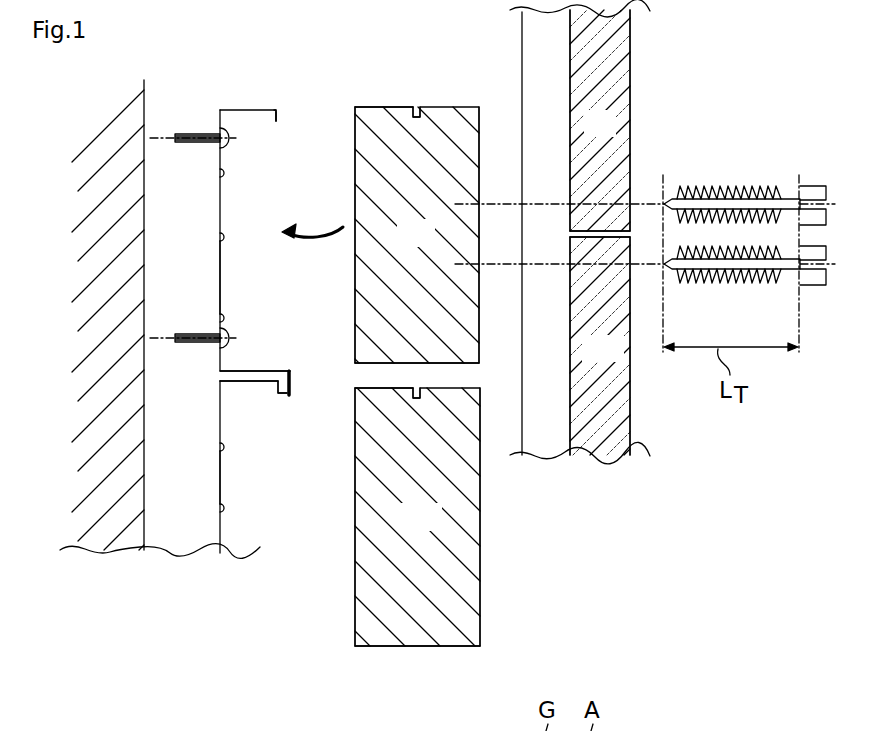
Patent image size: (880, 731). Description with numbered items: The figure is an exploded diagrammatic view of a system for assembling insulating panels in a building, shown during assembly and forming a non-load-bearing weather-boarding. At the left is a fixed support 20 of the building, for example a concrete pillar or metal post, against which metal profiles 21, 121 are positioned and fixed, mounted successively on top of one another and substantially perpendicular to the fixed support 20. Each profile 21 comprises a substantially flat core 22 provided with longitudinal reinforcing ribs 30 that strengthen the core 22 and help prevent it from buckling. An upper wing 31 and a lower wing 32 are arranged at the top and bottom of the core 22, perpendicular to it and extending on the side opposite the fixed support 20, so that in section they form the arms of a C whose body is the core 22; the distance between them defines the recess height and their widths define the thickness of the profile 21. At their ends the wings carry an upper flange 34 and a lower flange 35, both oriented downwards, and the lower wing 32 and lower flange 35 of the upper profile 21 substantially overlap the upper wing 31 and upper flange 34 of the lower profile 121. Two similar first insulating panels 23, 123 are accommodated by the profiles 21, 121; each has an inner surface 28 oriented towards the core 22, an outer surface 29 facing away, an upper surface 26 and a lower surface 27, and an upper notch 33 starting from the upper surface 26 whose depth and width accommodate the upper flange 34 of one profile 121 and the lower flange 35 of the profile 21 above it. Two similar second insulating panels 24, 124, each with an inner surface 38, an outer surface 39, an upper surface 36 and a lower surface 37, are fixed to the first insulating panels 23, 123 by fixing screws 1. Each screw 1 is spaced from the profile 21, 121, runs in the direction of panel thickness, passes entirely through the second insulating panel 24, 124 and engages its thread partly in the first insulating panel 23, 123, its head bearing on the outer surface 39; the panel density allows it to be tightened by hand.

The fixing screw 1 is at (720, 170).
The fixed support 20 is at (144, 88).
The profile 21 is at (251, 104).
The core 22 is at (224, 278).
The first insulating panel 23 is at (432, 246).
The second insulating panel 24 is at (616, 135).
The upper surface 26 is at (385, 106).
The lower surface 27 is at (482, 368).
The inner surface 28 is at (355, 160).
The outer surface 29 is at (480, 138).
The longitudinal reinforcing rib 30 is at (224, 173).
The upper wing 31 is at (277, 112).
The lower wing 32 is at (271, 370).
The upper notch 33 is at (417, 106).
The upper flange 34 is at (277, 118).
The lower flange 35 is at (290, 386).
The upper surface 36 is at (573, 231).
The lower surface 37 is at (631, 248).
The inner surface 38 is at (569, 89).
The outer surface 39 is at (632, 85).
The profile 121 is at (220, 464).
The first insulating panel 123 is at (440, 530).
The second insulating panel 124 is at (626, 360).